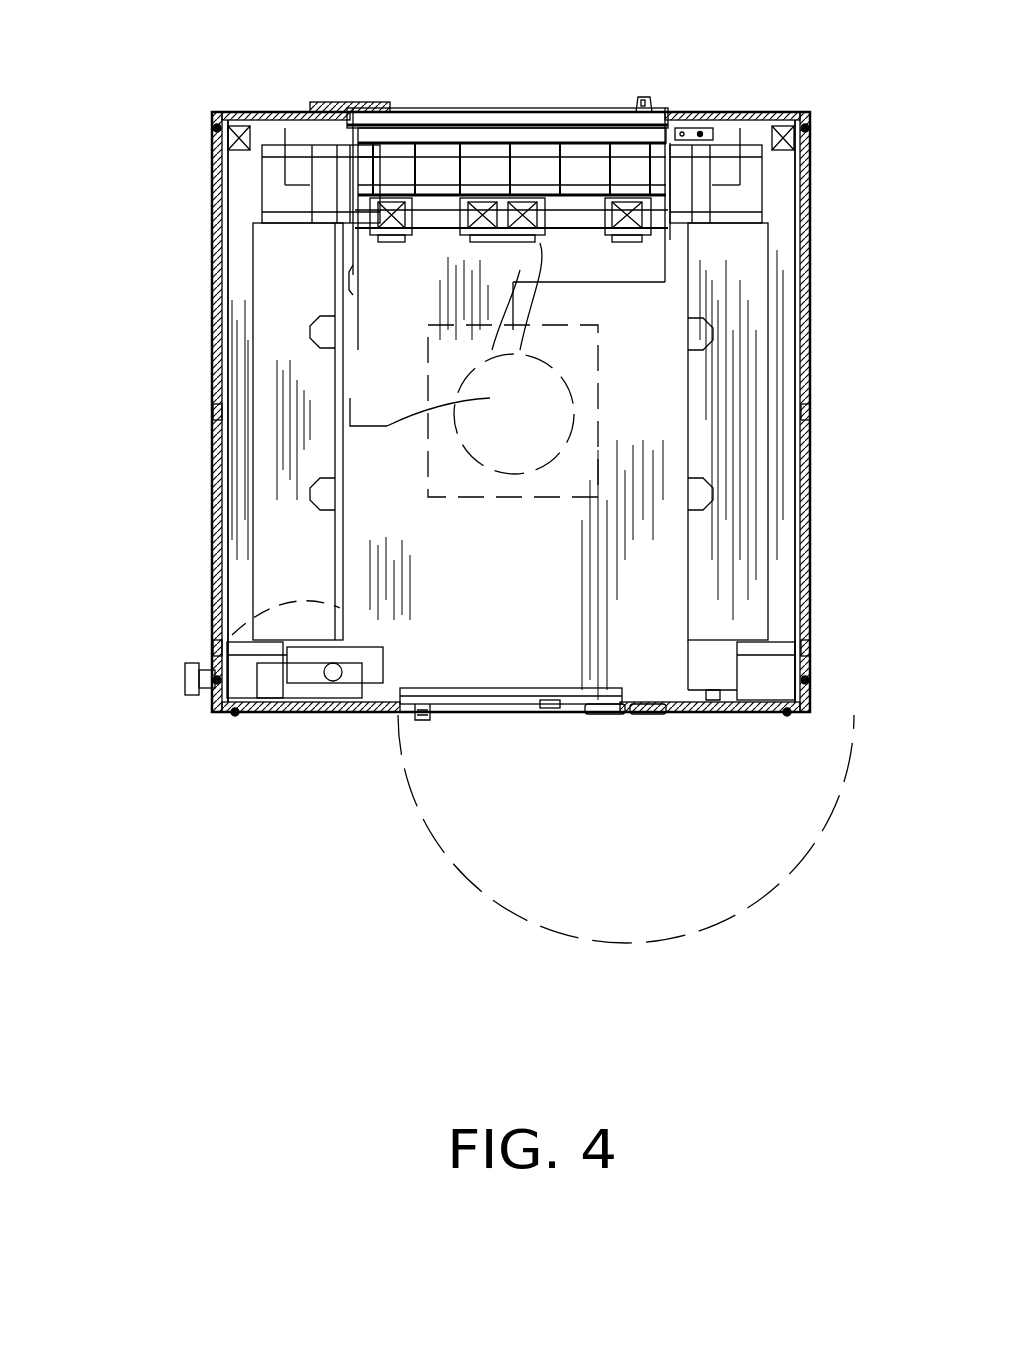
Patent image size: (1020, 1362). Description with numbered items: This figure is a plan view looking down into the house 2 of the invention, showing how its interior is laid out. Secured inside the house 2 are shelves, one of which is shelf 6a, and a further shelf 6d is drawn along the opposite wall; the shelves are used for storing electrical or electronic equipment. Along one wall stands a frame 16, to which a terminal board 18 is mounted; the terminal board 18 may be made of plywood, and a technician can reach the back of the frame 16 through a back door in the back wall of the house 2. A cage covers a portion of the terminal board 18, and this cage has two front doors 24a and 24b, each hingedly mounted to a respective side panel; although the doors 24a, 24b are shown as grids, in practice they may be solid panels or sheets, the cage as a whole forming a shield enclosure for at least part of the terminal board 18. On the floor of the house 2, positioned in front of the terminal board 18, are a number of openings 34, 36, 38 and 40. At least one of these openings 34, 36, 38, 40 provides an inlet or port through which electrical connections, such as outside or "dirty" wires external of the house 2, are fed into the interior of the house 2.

The house 2 is at (190, 428).
The shelf 6a is at (742, 418).
The left side wall 6d is at (292, 447).
The frame 16 is at (418, 135).
The terminal board 18 is at (448, 167).
The front door 24a is at (355, 398).
The front door 24b is at (650, 282).
The opening 34 is at (393, 245).
The opening 36 is at (483, 243).
The opening 38 is at (516, 350).
The opening 40 is at (600, 243).